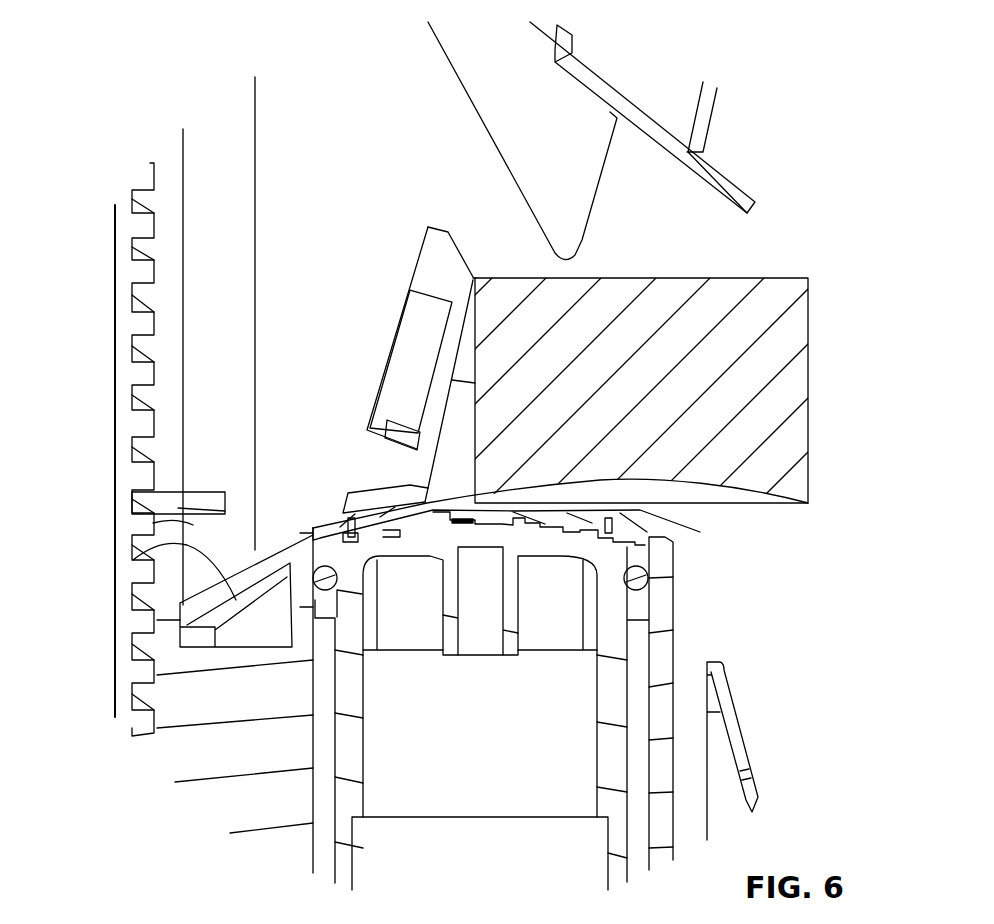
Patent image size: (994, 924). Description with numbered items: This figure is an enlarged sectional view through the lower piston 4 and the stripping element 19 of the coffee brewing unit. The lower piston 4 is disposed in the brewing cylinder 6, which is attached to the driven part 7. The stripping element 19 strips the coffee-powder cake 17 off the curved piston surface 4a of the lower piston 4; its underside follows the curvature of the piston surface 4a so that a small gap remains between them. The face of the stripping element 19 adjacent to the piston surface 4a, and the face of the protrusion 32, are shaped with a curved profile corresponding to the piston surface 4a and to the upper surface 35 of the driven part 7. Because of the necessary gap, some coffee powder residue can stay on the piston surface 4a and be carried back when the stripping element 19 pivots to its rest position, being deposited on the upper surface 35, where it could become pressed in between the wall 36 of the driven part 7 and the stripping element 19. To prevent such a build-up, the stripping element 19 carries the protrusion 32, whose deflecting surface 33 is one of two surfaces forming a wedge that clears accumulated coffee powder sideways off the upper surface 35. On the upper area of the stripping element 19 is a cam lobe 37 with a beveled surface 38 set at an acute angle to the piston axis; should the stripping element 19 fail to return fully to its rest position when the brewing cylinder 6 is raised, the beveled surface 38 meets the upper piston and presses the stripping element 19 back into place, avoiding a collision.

The lower piston 4 is at (640, 650).
The piston surface 4a is at (650, 513).
The brewing cylinder 6 is at (660, 715).
The driven part 7 is at (193, 697).
The coffee-powder cake 17 is at (808, 318).
The stripping element 19 is at (418, 263).
The protrusion 32 is at (383, 497).
The deflecting surface 33 is at (337, 500).
The upper surface 35 is at (153, 553).
The wall 36 is at (153, 523).
The cam lobe 37 is at (440, 237).
The beveled surface 38 is at (476, 280).